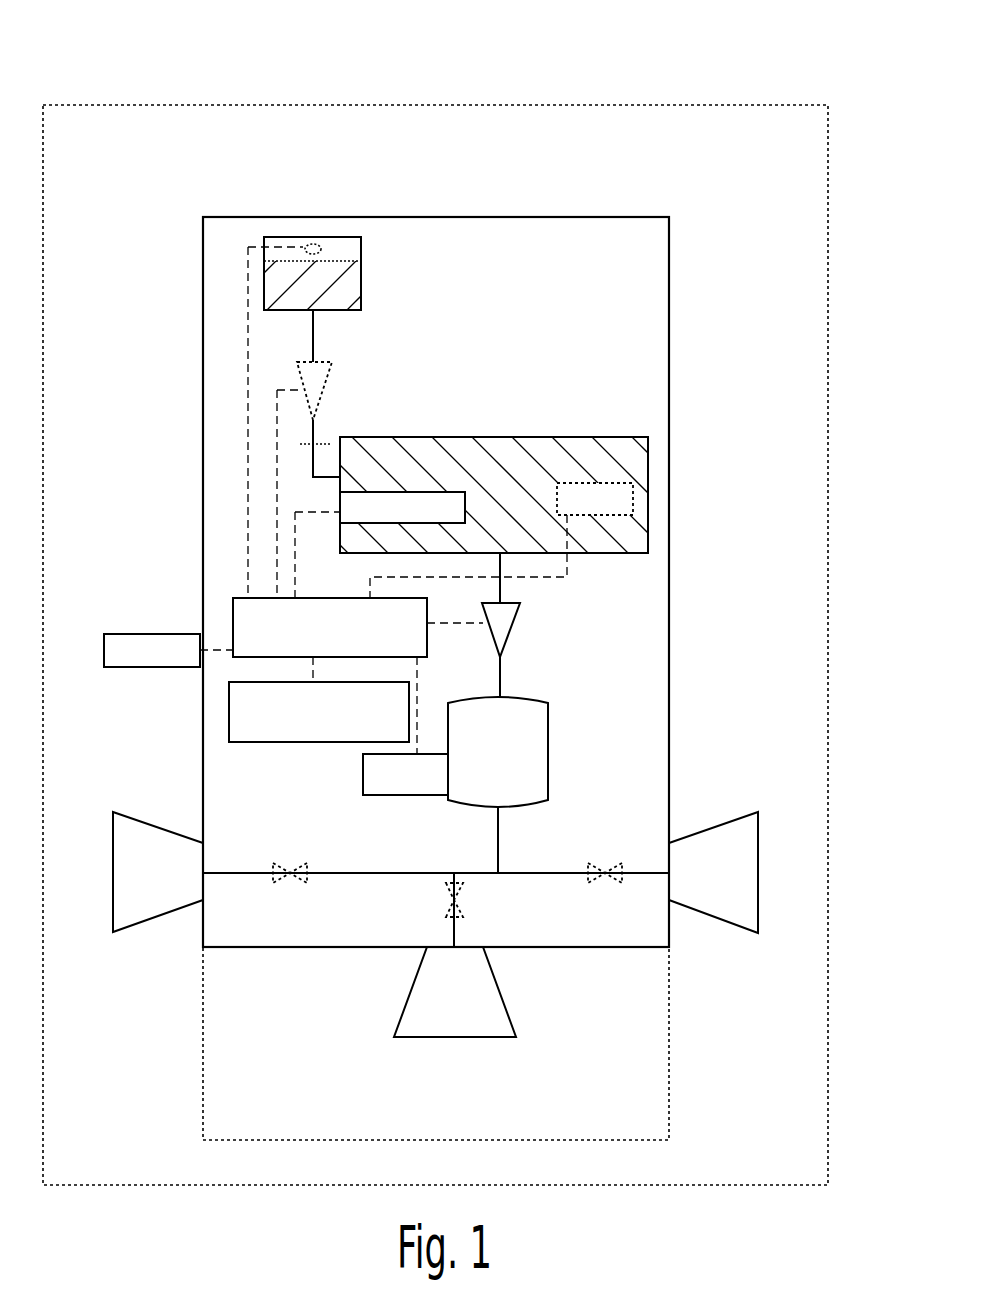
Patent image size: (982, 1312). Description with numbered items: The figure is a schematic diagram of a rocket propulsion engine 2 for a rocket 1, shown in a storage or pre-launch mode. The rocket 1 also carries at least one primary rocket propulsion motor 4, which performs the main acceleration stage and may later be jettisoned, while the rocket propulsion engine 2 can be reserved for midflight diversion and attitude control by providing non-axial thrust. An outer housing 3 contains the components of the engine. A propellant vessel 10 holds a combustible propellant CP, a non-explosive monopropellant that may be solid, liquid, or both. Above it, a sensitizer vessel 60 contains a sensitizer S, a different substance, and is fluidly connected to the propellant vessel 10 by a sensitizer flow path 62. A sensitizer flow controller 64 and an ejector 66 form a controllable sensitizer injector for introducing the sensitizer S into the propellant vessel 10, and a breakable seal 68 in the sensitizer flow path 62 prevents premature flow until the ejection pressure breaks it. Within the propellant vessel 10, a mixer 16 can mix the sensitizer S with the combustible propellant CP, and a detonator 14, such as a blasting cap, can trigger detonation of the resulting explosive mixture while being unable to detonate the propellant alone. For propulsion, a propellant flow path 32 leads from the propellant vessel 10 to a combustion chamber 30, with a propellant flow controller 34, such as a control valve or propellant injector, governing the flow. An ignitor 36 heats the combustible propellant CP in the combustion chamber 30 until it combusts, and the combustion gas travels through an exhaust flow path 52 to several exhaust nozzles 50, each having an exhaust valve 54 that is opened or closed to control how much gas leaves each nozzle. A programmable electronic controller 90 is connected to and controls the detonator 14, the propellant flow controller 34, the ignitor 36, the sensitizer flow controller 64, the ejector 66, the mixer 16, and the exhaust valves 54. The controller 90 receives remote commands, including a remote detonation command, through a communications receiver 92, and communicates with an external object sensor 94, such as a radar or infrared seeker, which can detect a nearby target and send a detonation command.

The rocket 1 is at (257, 96).
The rocket propulsion engine 2 is at (212, 206).
The outer housing 3 is at (570, 217).
The primary rocket propulsion motor 4 is at (196, 1067).
The propellant vessel 10 is at (648, 468).
The detonator 14 is at (341, 498).
The mixer 16 is at (633, 500).
The combustible propellant CP is at (645, 547).
The combustion chamber 30 is at (548, 752).
The propellant flow path 32 is at (500, 675).
The propellant flow controller 34 is at (513, 643).
The ignitor 36 is at (363, 790).
The exhaust nozzle 50 is at (113, 908).
The exhaust flow path 52 is at (498, 845).
The exhaust valve 54 is at (282, 880).
The sensitizer S is at (270, 279).
The sensitizer vessel 60 is at (363, 249).
The sensitizer flow path 62 is at (312, 350).
The sensitizer flow controller 64 is at (300, 380).
The ejector 66 is at (320, 244).
The breakable seal 68 is at (300, 445).
The programmable electronic controller 90 is at (233, 632).
The communications receiver 92 is at (229, 725).
The external object sensor 94 is at (130, 633).